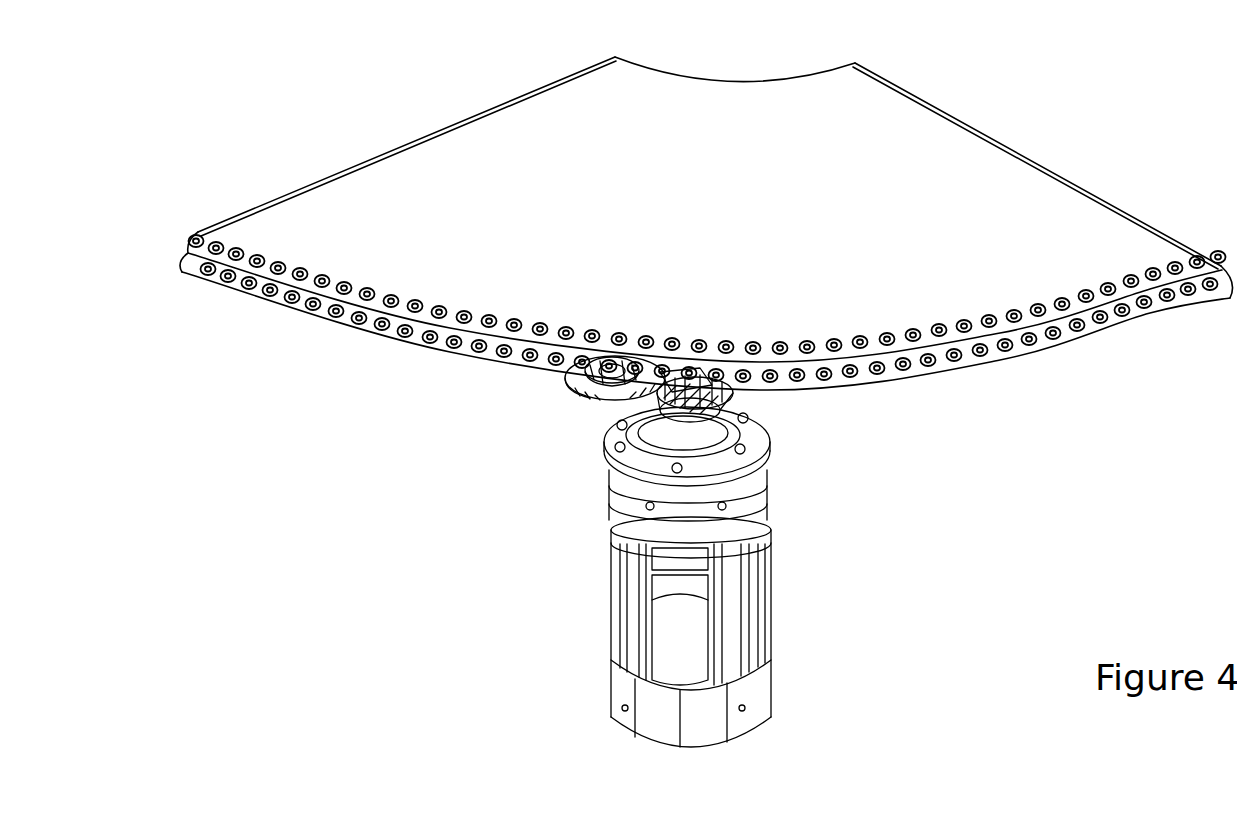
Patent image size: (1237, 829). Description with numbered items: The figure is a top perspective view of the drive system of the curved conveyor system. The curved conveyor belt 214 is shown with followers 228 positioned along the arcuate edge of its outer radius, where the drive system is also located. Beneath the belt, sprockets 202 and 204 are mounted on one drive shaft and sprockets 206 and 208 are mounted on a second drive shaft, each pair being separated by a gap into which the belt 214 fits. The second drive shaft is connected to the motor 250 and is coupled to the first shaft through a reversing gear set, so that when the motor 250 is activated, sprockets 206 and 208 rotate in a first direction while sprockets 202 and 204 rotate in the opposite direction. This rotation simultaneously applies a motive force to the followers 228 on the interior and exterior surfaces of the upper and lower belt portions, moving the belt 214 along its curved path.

The conveyor belt 214 is at (735, 212).
The followers 228 is at (1055, 305).
The sprocket 202 is at (565, 385).
The sprocket 204 is at (570, 400).
The sprocket 206 is at (735, 400).
The sprocket 208 is at (742, 436).
The motor 250 is at (774, 605).